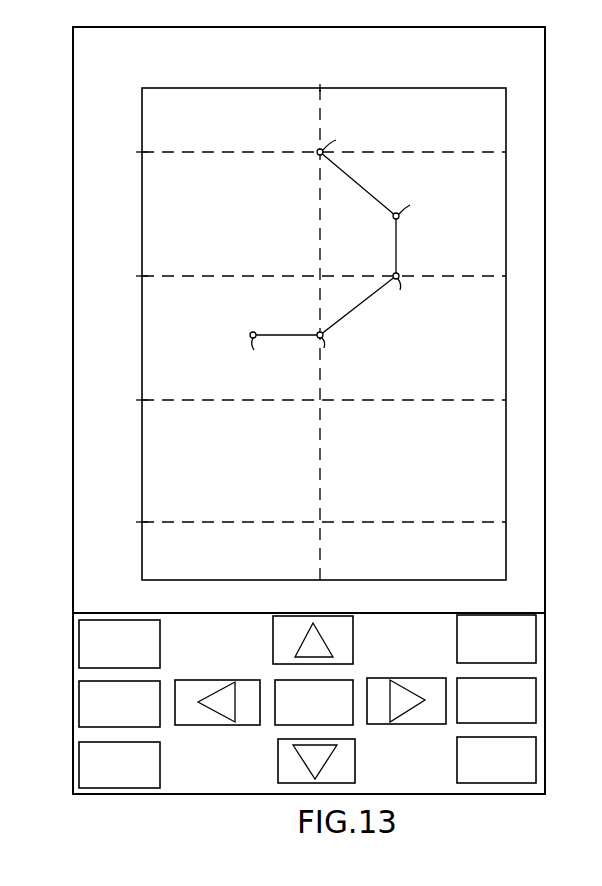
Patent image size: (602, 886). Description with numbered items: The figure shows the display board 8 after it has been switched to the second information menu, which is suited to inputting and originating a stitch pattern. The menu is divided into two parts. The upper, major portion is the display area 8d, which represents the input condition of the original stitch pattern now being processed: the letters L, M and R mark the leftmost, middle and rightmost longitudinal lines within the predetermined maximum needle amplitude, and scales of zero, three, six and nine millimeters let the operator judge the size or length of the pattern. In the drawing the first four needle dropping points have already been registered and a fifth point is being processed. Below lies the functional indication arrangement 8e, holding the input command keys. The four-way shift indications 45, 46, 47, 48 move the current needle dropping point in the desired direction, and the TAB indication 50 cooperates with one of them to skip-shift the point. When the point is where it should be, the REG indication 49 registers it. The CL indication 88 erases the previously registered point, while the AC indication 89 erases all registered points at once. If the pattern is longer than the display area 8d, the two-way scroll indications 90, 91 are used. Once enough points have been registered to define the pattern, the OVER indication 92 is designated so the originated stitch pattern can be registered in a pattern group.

The display board 8 is at (70, 40).
The display area 8d is at (73, 175).
The functional indication arrangement 8e is at (88, 612).
The CL indication 88 is at (86, 655).
The AC indication 89 is at (85, 703).
The OVER indication 92 is at (84, 757).
The shift indication 48 is at (181, 684).
The REG indication 49 is at (278, 681).
The shift indication 47 is at (431, 680).
The shift indication 45 is at (352, 622).
The shift indication 46 is at (355, 768).
The scroll indication 90 is at (533, 631).
The TAB indication 50 is at (530, 689).
The scroll indication 91 is at (533, 762).